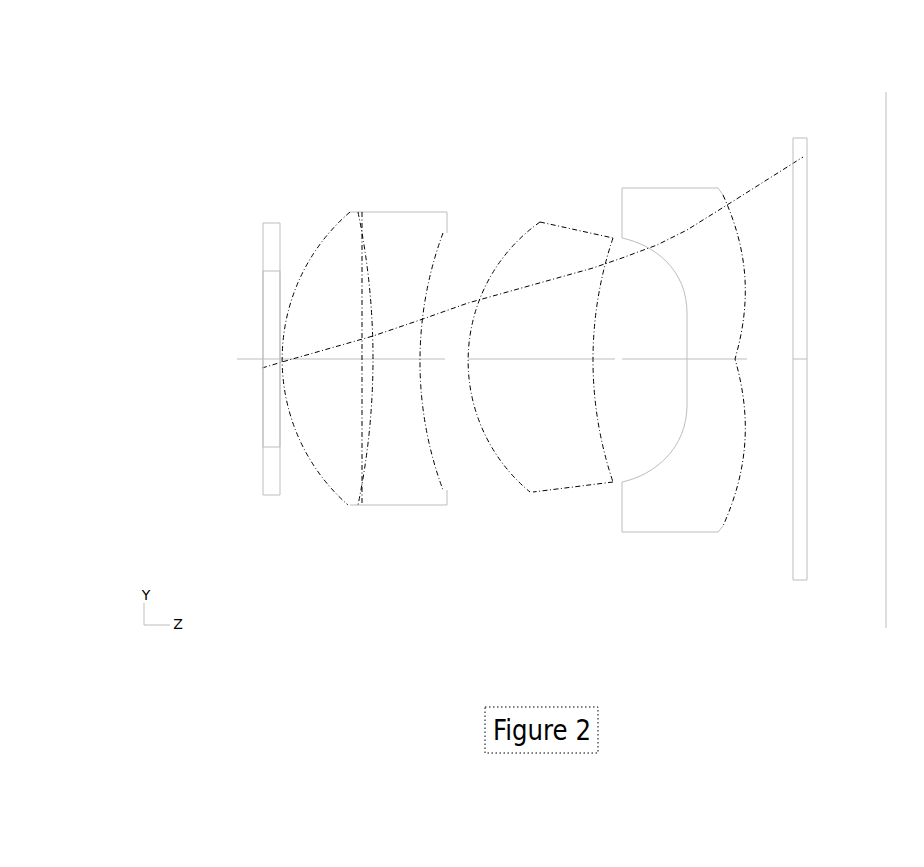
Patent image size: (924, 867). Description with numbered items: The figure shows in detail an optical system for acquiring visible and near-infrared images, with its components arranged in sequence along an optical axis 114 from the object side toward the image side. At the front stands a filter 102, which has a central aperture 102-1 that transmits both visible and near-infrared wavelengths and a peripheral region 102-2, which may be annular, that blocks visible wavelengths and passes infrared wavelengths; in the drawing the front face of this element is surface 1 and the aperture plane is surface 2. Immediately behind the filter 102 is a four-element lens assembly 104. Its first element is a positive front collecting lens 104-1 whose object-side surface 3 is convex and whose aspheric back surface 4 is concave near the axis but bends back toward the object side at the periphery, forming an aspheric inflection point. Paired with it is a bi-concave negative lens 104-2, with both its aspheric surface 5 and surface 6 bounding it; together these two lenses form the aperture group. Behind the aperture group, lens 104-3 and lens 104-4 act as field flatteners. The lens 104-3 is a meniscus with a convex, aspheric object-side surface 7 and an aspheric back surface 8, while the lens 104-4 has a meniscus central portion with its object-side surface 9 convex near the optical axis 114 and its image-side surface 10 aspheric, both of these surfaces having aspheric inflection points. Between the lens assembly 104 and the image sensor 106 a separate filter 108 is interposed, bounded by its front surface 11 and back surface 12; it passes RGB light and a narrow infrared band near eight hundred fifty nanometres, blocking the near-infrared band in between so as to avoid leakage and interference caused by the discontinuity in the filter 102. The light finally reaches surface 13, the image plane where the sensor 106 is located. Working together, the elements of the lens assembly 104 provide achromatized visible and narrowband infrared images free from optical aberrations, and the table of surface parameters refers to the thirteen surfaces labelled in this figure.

The filter 102 is at (176, 311).
The central aperture 102-1 is at (272, 313).
The peripheral region 102-2 is at (272, 252).
The optical axis 114 is at (237, 357).
The lens assembly 104 is at (757, 143).
The front collecting lens 104-1 is at (337, 354).
The negative lens 104-2 is at (422, 357).
The lens 104-3 is at (540, 359).
The lens 104-4 is at (670, 352).
The image sensor 106 is at (841, 324).
The filter 108 is at (784, 408).
The surface 1 is at (263, 478).
The surface 2 is at (282, 488).
The surface 3 is at (340, 492).
The surface 4 is at (367, 473).
The surface 5 is at (372, 448).
The surface 6 is at (445, 482).
The surface 7 is at (530, 492).
The surface 8 is at (602, 463).
The surface 9 is at (657, 463).
The surface 10 is at (731, 512).
The surface 11 is at (791, 512).
The surface 12 is at (822, 359).
The surface 13 is at (884, 517).